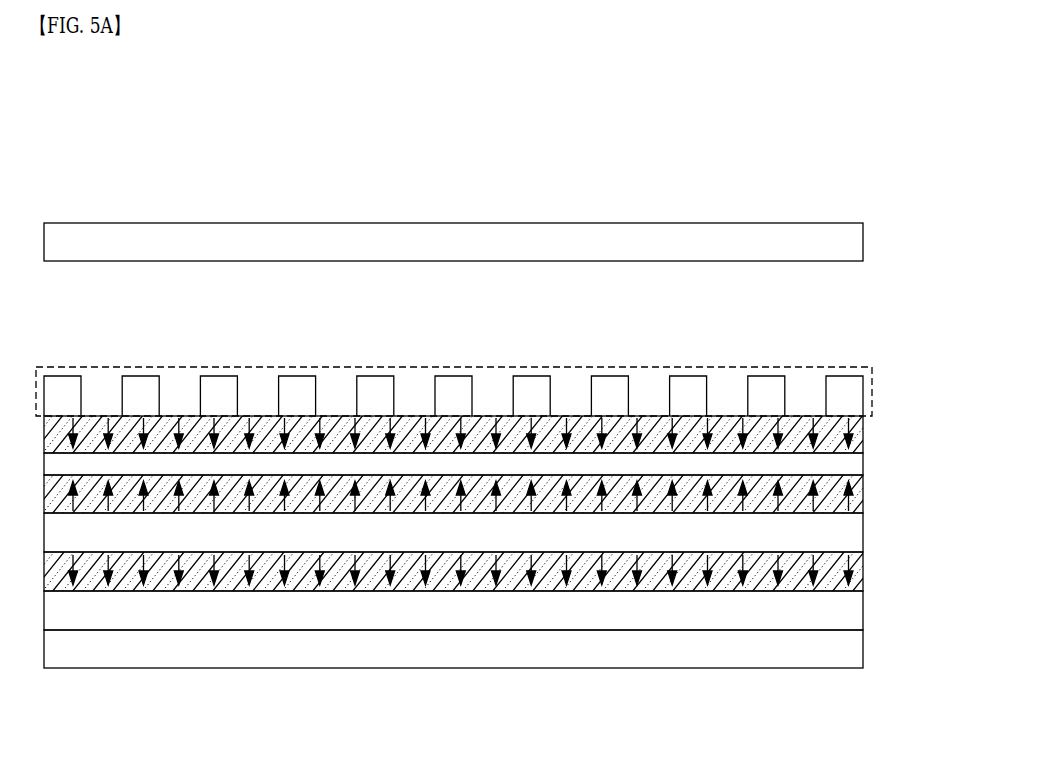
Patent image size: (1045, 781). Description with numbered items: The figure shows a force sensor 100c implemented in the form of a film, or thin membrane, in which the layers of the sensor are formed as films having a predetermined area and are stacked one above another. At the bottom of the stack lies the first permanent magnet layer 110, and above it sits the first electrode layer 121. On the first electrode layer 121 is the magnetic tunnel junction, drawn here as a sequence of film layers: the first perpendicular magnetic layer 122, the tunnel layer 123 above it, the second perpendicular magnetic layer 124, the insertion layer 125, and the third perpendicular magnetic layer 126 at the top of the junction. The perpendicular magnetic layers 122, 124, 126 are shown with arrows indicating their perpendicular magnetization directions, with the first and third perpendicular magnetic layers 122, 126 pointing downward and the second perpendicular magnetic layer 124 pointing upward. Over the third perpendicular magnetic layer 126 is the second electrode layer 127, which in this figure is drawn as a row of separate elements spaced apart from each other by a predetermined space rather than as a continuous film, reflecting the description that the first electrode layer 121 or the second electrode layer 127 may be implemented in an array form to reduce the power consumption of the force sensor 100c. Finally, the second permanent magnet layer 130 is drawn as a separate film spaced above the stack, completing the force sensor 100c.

The force sensor 100c is at (532, 145).
The second permanent magnet layer 130 is at (863, 243).
The second electrode layer 127 is at (872, 391).
The third perpendicular magnetic layer 126 is at (863, 432).
The insertion layer 125 is at (863, 461).
The second perpendicular magnetic layer 124 is at (863, 491).
The tunnel layer 123 is at (863, 532).
The first perpendicular magnetic layer 122 is at (863, 570).
The first electrode layer 121 is at (863, 608).
The first permanent magnet layer 110 is at (863, 647).